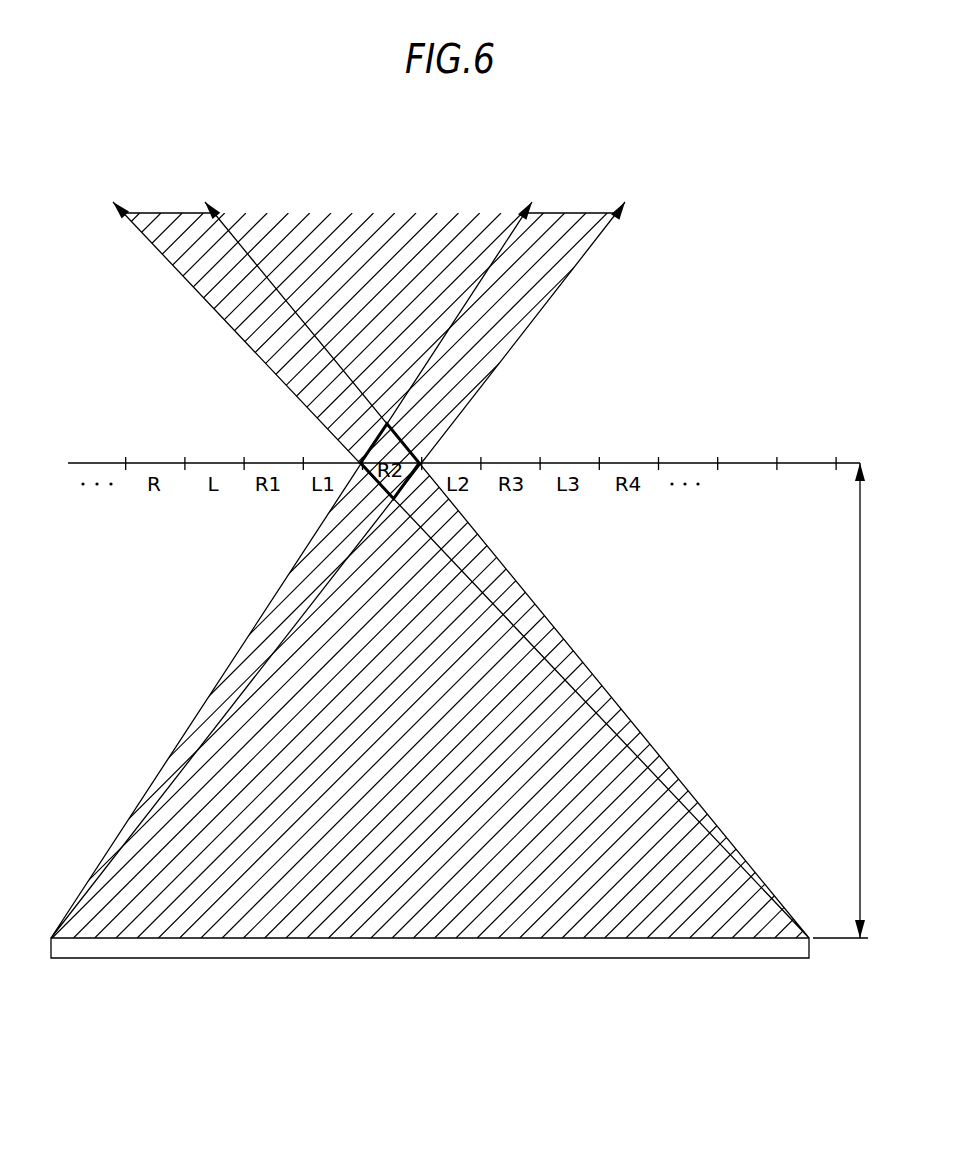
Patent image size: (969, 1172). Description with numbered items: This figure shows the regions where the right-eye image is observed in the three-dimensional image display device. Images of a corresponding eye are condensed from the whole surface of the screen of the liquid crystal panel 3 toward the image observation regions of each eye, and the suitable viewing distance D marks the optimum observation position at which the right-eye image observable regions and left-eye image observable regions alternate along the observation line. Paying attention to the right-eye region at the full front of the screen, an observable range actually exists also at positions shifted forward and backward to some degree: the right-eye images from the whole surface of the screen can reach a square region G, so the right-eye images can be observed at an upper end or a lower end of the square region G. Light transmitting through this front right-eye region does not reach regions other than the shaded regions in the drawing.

The liquid crystal panel 3 is at (365, 953).
The square region G is at (392, 440).
The suitable viewing distance D is at (840, 700).